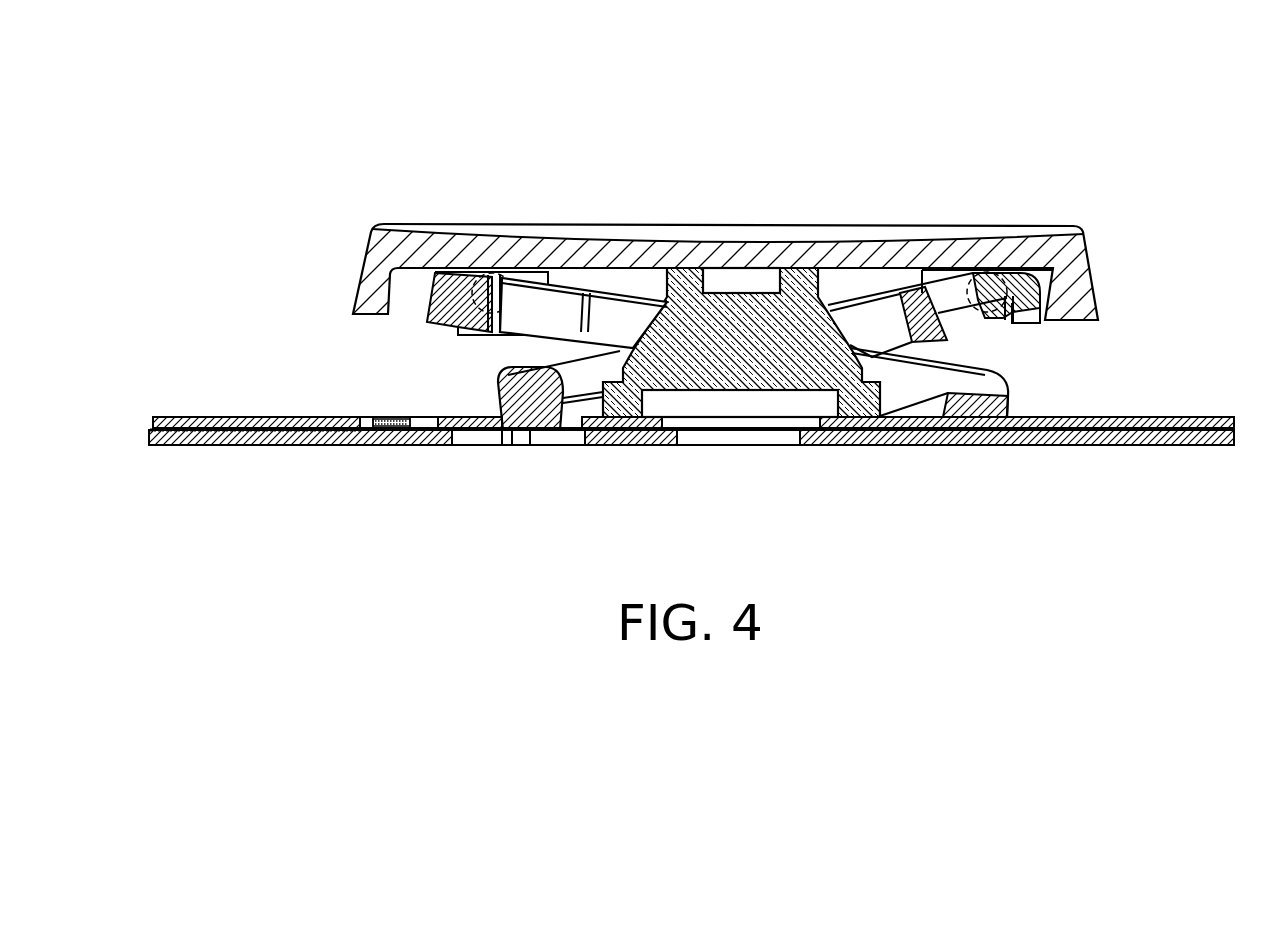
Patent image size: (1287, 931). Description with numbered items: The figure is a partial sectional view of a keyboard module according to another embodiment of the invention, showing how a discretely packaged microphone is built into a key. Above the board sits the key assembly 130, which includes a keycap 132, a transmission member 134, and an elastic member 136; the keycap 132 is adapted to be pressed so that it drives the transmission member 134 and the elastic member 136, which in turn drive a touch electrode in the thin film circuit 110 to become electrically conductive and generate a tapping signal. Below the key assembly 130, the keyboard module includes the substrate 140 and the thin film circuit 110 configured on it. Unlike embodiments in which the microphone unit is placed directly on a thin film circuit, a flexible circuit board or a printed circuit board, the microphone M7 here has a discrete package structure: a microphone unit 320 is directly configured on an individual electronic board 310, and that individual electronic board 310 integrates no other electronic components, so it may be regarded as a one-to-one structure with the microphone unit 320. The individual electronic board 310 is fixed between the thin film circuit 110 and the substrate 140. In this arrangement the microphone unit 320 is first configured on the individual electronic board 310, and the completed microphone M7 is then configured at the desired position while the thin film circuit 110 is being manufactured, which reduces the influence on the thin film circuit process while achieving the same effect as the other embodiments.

The thin film circuit 110 is at (1203, 417).
The key assembly 130 is at (302, 32).
The keycap 132 is at (823, 226).
The transmission member 134 is at (537, 312).
The elastic member 136 is at (748, 312).
The substrate 140 is at (1200, 447).
The individual electronic board 310 is at (292, 417).
The microphone unit 320 is at (385, 424).
The microphone M7 is at (447, 32).